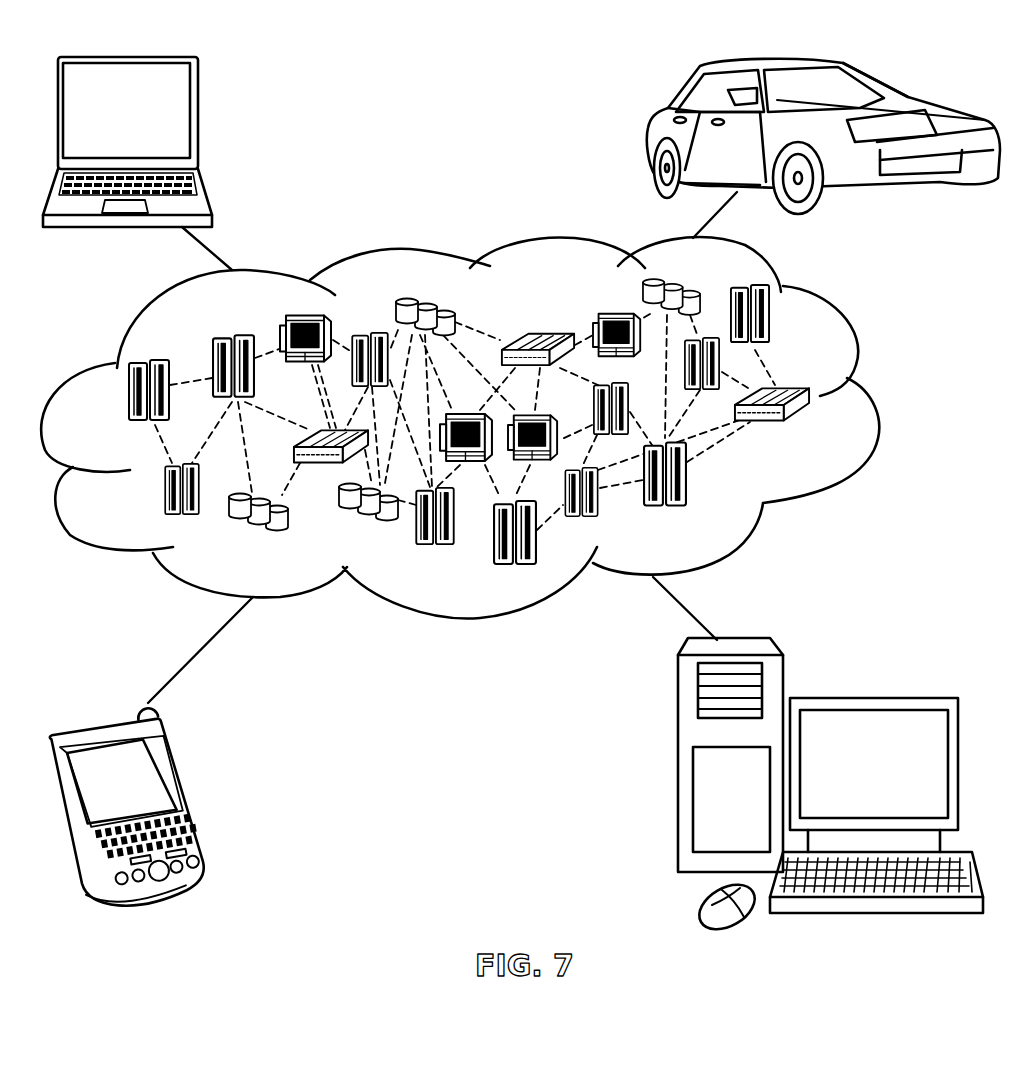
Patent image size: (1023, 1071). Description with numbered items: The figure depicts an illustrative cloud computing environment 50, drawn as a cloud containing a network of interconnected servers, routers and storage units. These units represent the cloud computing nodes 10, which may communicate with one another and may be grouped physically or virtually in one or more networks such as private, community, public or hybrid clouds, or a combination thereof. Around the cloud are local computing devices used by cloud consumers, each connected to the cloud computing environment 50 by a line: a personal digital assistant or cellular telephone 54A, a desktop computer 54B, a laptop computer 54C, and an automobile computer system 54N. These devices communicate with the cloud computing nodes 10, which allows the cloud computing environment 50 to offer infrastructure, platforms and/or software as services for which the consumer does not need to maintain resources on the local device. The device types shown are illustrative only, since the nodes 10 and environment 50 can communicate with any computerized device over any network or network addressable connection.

The cloud computing node 10 is at (814, 432).
The cloud computing environment 50 is at (873, 404).
The personal digital assistant or cellular telephone 54A is at (190, 795).
The desktop computer 54B is at (873, 695).
The laptop computer 54C is at (198, 120).
The automobile computer system 54N is at (650, 137).